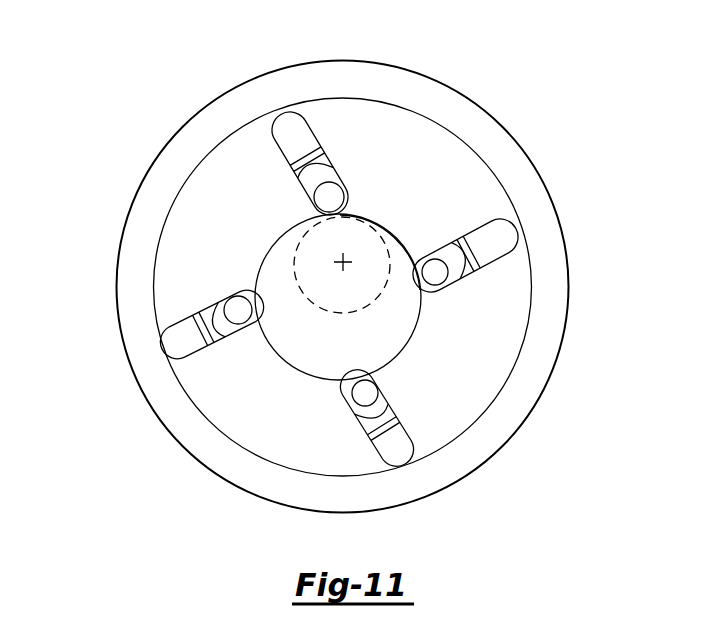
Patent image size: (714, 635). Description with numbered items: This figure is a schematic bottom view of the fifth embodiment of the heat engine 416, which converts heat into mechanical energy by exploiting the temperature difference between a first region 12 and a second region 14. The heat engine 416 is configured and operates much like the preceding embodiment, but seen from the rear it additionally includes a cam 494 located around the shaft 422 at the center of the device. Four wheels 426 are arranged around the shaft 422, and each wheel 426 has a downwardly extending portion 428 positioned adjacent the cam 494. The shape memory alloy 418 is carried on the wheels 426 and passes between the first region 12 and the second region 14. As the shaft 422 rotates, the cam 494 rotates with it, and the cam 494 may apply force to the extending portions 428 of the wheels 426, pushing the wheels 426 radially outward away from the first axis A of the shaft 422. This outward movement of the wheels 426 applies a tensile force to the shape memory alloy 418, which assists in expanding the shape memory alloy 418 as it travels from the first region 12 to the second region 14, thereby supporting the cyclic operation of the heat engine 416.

The heat engine 416 is at (128, 100).
The first region 12 is at (314, 453).
The second region 14 is at (404, 153).
The cam 494 is at (373, 222).
The shaft 422 is at (295, 261).
The first axis A is at (347, 266).
The shape memory alloy 418 is at (306, 160).
The wheels 426 is at (222, 328).
The downwardly extending portion 428 is at (329, 198).